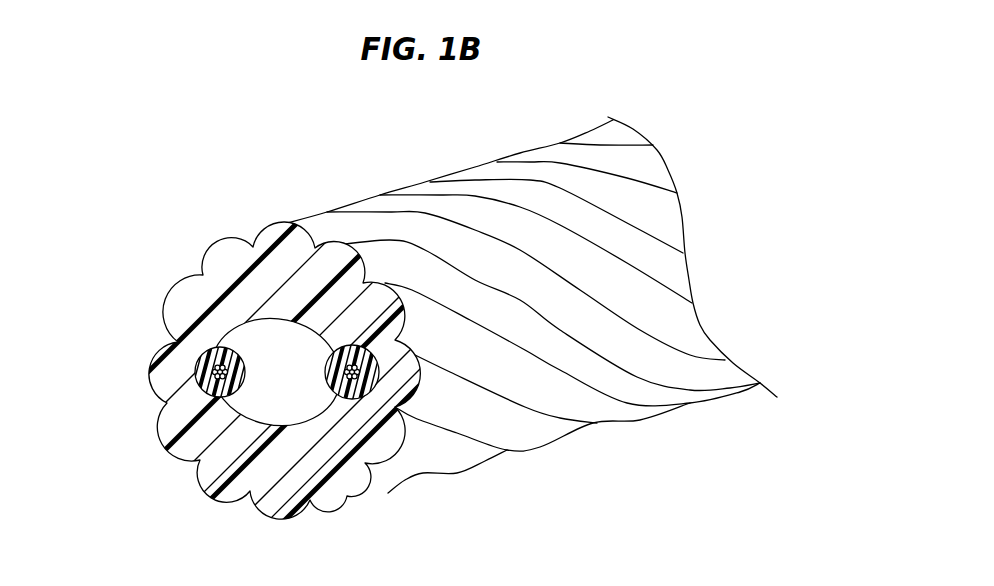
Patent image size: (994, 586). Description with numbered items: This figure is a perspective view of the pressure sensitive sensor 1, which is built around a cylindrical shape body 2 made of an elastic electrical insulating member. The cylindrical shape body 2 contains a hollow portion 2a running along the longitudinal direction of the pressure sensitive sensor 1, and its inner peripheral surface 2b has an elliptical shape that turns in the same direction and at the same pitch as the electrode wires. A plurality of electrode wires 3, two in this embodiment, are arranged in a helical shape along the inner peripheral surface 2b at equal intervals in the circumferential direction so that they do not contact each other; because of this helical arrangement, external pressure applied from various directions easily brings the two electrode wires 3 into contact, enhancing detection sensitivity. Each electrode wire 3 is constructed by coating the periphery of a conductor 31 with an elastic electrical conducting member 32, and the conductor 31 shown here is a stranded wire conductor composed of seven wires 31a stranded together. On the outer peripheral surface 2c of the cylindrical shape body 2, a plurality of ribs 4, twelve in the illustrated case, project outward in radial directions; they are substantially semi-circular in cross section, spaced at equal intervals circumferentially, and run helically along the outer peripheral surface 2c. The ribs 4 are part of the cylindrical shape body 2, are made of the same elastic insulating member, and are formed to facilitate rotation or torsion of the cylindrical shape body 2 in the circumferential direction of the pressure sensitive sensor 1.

The pressure sensitive sensor 1 is at (345, 158).
The cylindrical shape body 2 is at (352, 343).
The hollow portion 2a is at (253, 340).
The inner peripheral surface 2b is at (262, 403).
The outer peripheral surface 2c is at (187, 358).
The electrode wires 3 is at (200, 356).
The conductor 31 is at (195, 371).
The wires 31a is at (212, 375).
The elastic electrical conducting member 32 is at (200, 393).
The ribs 4 is at (460, 462).